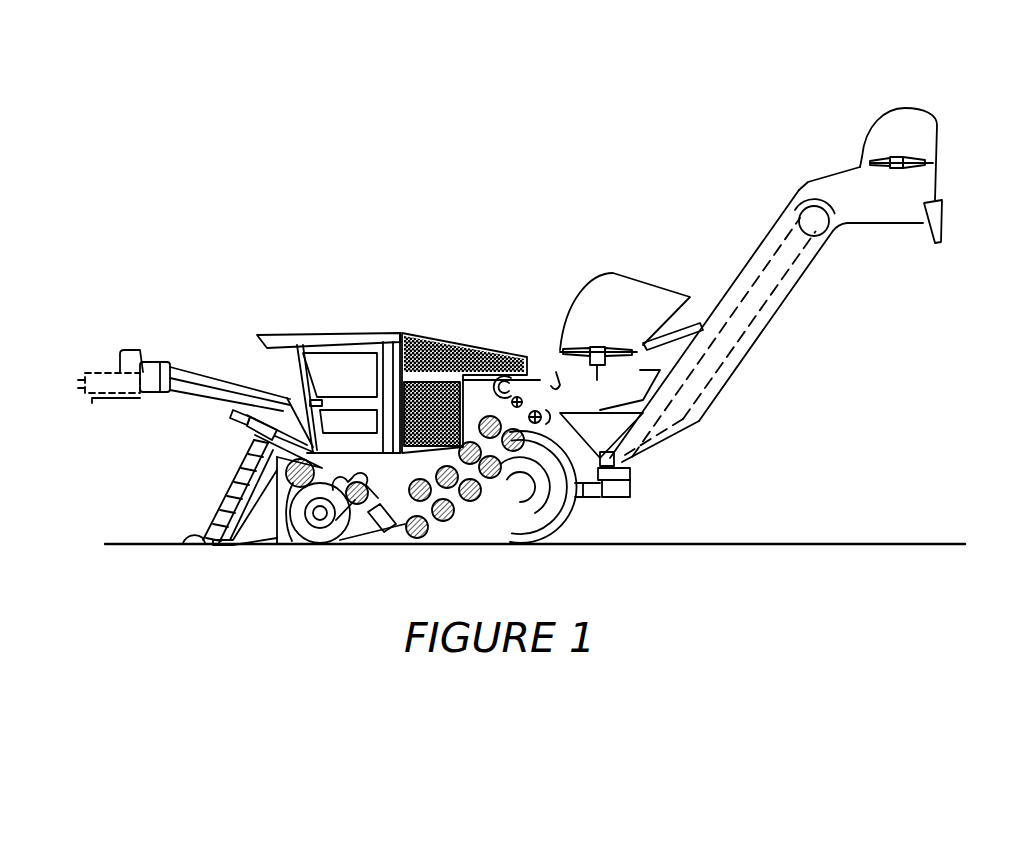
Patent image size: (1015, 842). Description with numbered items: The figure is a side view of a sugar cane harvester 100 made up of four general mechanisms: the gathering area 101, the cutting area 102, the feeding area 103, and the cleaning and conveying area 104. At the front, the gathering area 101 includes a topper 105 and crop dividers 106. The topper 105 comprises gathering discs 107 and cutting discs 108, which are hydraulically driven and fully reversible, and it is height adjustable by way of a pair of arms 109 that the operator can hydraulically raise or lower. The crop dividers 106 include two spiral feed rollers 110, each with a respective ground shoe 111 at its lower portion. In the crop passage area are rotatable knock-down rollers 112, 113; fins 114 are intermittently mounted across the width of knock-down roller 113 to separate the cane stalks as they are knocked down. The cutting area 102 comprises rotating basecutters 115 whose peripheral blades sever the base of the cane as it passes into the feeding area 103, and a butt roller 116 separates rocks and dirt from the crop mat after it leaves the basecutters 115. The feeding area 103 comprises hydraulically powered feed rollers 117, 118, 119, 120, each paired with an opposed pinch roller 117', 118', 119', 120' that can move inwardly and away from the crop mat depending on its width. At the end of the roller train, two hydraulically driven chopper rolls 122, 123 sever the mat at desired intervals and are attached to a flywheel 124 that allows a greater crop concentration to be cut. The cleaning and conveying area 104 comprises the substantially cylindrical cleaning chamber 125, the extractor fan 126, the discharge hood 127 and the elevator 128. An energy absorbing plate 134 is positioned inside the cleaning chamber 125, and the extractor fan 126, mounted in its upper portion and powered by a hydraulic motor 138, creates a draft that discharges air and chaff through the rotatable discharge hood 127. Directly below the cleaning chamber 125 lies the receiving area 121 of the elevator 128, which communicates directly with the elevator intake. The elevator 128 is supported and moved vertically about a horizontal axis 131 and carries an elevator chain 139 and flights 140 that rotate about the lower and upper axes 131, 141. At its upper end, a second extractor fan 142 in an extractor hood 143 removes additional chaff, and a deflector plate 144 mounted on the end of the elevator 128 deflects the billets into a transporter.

The sugar cane harvester 100 is at (397, 328).
The gathering area 101 is at (178, 502).
The cutting area 102 is at (381, 560).
The feeding area 103 is at (470, 502).
The cleaning and conveying area 104 is at (700, 292).
The topper 105 is at (158, 365).
The crop dividers 106 is at (236, 548).
The gathering discs 107 is at (88, 378).
The cutting discs 108 is at (92, 404).
The arms 109 is at (229, 392).
The spiral feed rollers 110 is at (212, 509).
The ground shoe 111 is at (183, 543).
The knock-down roller 112 is at (292, 541).
The knock-down roller 113 is at (320, 530).
The fins 114 is at (350, 515).
The basecutters 115 is at (386, 540).
The butt roller 116 is at (418, 539).
The feed roller 117 is at (453, 534).
The feed roller 118 is at (493, 527).
The feed roller 119 is at (521, 534).
The feed roller 120 is at (544, 499).
The pinch roller 117' is at (427, 404).
The pinch roller 118' is at (457, 401).
The pinch roller 119' is at (481, 377).
The pinch roller 120' is at (503, 384).
The receiving area 121 is at (600, 452).
The chopper roll 122 is at (536, 411).
The chopper roll 123 is at (517, 397).
The flywheel 124 is at (508, 376).
The cleaning chamber 125 is at (648, 349).
The extractor fan 126 is at (592, 349).
The discharge hood 127 is at (643, 297).
The elevator 128 is at (699, 422).
The horizontal axis 131 is at (626, 472).
The energy absorbing plate 134 is at (573, 386).
The hydraulic motor 138 is at (602, 368).
The elevator chain 139 is at (652, 388).
The flights 140 is at (729, 289).
The upper axis 141 is at (834, 232).
The second extractor fan 142 is at (910, 168).
The extractor hood 143 is at (940, 118).
The deflector plate 144 is at (942, 226).